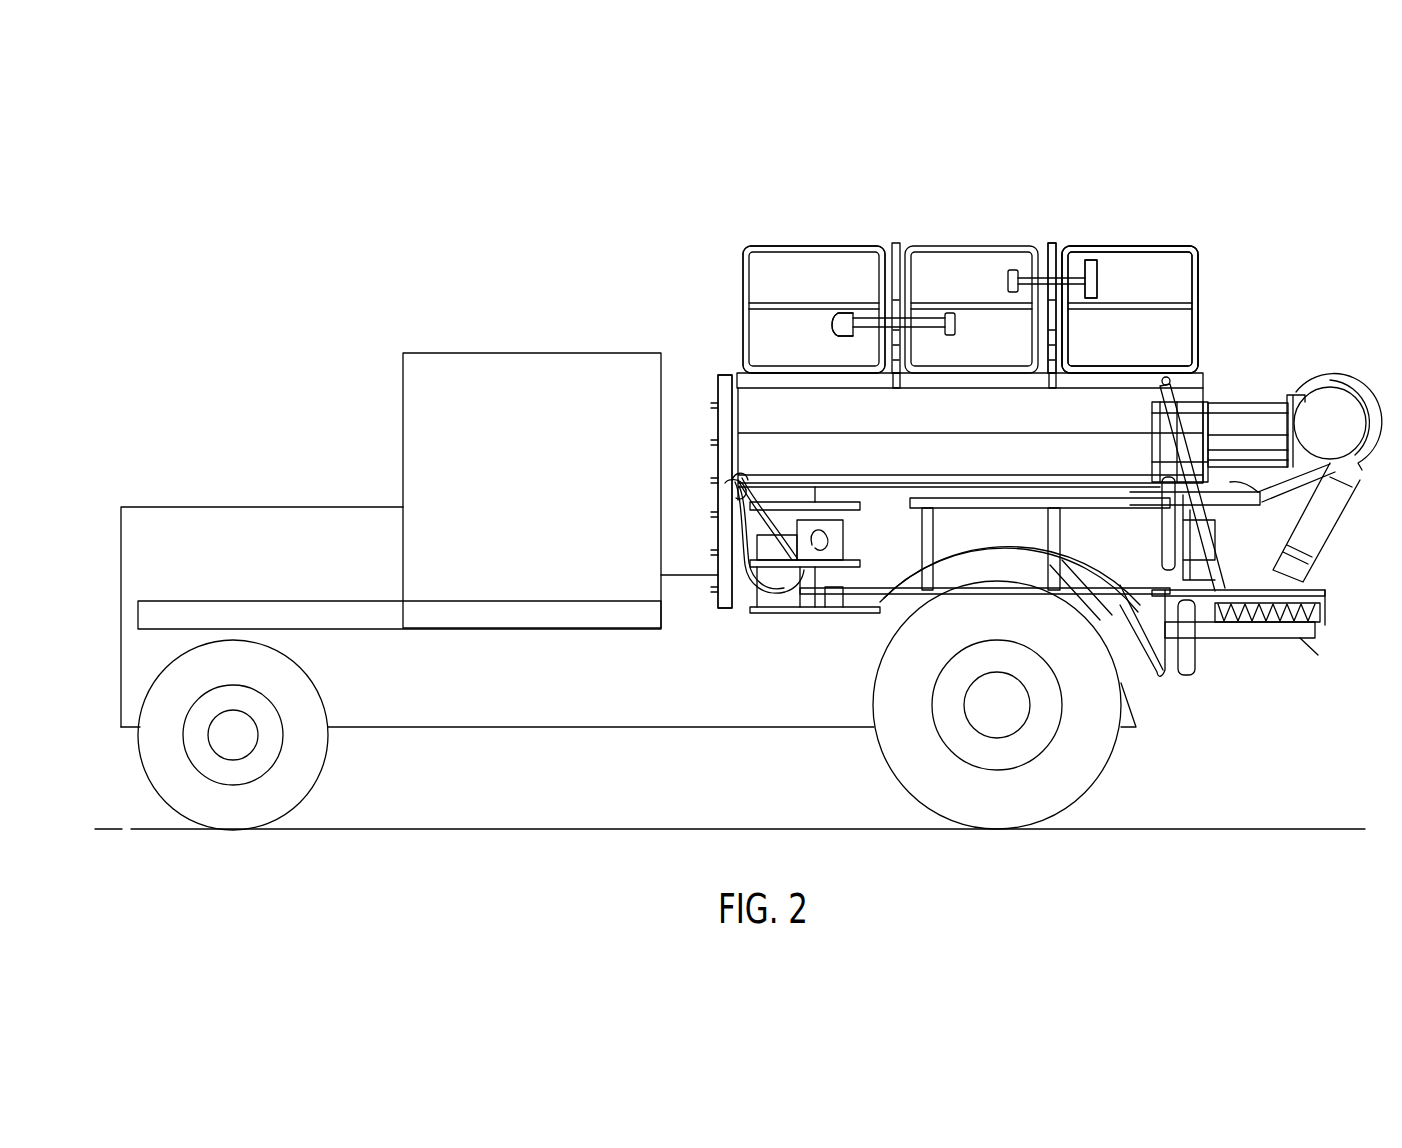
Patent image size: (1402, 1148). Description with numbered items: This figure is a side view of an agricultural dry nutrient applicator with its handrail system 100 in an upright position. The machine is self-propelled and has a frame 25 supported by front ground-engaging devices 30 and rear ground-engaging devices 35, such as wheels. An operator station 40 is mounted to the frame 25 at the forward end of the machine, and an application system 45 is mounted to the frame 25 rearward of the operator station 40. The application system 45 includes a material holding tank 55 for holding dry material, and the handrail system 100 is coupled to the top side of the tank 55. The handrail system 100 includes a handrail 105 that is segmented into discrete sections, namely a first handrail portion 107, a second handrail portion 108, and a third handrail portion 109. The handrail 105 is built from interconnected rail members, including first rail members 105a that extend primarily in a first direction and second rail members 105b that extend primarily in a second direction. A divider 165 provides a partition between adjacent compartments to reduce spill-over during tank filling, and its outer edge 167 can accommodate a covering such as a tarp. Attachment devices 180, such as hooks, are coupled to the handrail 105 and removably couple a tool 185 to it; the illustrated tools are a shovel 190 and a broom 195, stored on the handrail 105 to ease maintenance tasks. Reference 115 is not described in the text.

The frame 25 is at (386, 612).
The front ground-engaging devices 30 is at (293, 763).
The rear ground-engaging devices 35 is at (1068, 762).
The operator station 40 is at (486, 352).
The application system 45 is at (1034, 113).
The tank 55 is at (982, 425).
The handrail system 100 is at (842, 146).
The handrail 105 is at (1171, 147).
The first rail members 105a is at (1192, 315).
The second rail members 105b is at (1198, 275).
The first handrail portion 107 is at (810, 246).
The second handrail portion 108 is at (962, 246).
The third handrail portion 109 is at (1165, 246).
The frame 115 is at (734, 181).
The divider 165 is at (895, 376).
The outer edge 167 is at (893, 243).
The attachment device 180 is at (875, 335).
The tool 185 is at (832, 320).
The shovel 190 is at (848, 315).
The broom 195 is at (1098, 272).